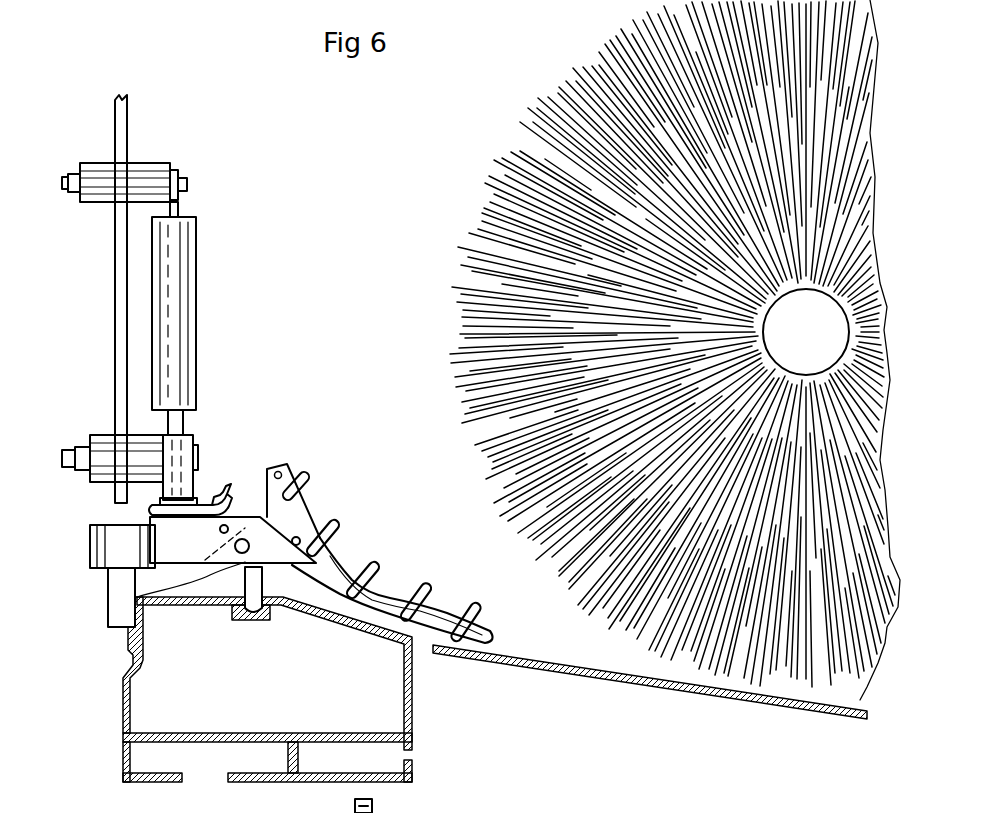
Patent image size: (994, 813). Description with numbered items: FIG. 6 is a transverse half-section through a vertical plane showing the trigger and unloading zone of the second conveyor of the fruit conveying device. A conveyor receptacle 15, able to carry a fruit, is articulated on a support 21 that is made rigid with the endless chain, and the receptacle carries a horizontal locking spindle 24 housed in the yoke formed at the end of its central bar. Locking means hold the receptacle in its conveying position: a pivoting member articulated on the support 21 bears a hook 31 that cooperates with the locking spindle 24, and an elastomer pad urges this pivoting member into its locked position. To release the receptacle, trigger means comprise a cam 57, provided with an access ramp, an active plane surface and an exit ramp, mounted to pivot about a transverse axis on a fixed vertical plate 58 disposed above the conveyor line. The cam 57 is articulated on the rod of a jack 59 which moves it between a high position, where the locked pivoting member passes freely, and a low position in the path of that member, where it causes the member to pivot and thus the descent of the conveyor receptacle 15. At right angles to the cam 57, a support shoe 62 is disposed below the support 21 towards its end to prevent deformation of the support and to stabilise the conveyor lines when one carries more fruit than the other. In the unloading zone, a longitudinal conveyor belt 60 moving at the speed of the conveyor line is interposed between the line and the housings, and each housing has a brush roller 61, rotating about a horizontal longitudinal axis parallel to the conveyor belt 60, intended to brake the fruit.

The fixed vertical plate 58 is at (120, 325).
The jack 59 is at (183, 258).
The cam 57 is at (178, 453).
The hook 31 is at (205, 503).
The locking spindle 24 is at (285, 462).
The conveyor receptacle 15 is at (358, 553).
The support 21 is at (137, 597).
The support shoe 62 is at (247, 617).
The conveyor belt 60 is at (548, 672).
The brush roller 61 is at (652, 625).